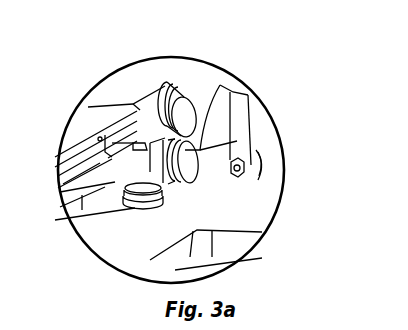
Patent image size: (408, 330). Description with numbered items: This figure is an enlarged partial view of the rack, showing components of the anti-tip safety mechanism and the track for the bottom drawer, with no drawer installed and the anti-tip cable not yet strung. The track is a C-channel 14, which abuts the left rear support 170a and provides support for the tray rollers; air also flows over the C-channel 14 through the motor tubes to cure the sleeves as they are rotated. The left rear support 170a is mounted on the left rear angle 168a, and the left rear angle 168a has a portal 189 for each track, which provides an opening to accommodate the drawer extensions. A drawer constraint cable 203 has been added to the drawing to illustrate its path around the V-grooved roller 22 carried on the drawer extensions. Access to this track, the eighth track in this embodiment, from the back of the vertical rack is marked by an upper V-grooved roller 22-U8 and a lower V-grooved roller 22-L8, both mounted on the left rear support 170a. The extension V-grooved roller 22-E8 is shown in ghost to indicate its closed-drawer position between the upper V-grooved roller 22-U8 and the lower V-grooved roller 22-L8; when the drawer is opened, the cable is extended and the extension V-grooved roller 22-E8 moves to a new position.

The C-channel 14 is at (97, 157).
The left rear support 170a is at (137, 143).
The upper V-grooved roller 22-U8 is at (182, 87).
The extension V-grooved roller 22-E8 is at (187, 115).
The lower V-grooved roller 22-L8 is at (193, 165).
The V-grooved roller 22 is at (133, 203).
The portal 189 is at (215, 121).
The left rear angle 168a is at (243, 143).
The drawer constraint cable 203 is at (172, 181).